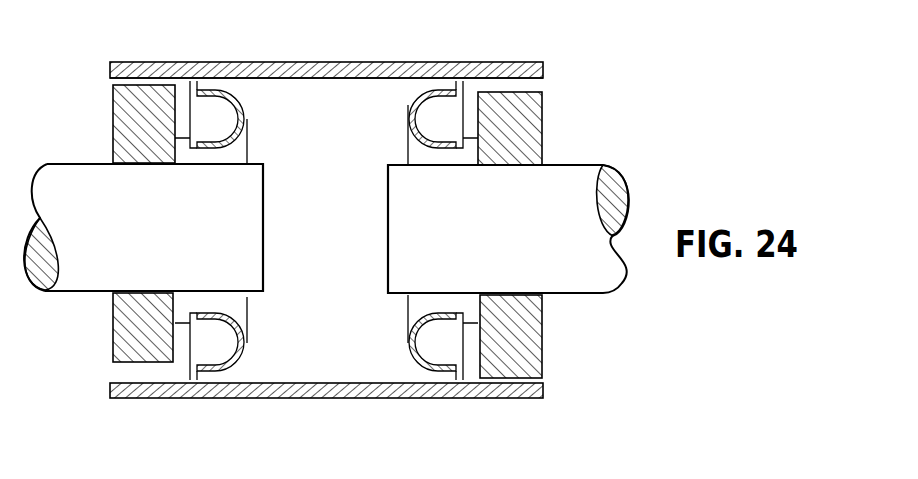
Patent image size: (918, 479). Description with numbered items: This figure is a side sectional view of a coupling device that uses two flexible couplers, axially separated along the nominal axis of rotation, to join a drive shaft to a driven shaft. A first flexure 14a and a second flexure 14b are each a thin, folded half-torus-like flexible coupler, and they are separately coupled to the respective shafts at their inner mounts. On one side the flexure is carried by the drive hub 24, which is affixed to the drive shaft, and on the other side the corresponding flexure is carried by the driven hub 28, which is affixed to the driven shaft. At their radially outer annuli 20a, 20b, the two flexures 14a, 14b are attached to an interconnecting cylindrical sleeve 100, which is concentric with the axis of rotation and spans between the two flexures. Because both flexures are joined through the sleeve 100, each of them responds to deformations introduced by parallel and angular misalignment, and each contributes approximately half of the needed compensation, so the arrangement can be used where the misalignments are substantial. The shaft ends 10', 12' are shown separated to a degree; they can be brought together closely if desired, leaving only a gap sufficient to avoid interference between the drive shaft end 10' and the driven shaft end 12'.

The interconnecting cylindrical sleeve 100 is at (343, 62).
The flexure 14a is at (262, 100).
The flexure 14b is at (388, 355).
The radially outer annulus 20a is at (232, 62).
The radially outer annulus 20b is at (418, 62).
The drive hub 24 is at (542, 138).
The driven hub 28 is at (122, 338).
The driven shaft end 12' is at (140, 248).
The drive shaft end 10' is at (523, 249).